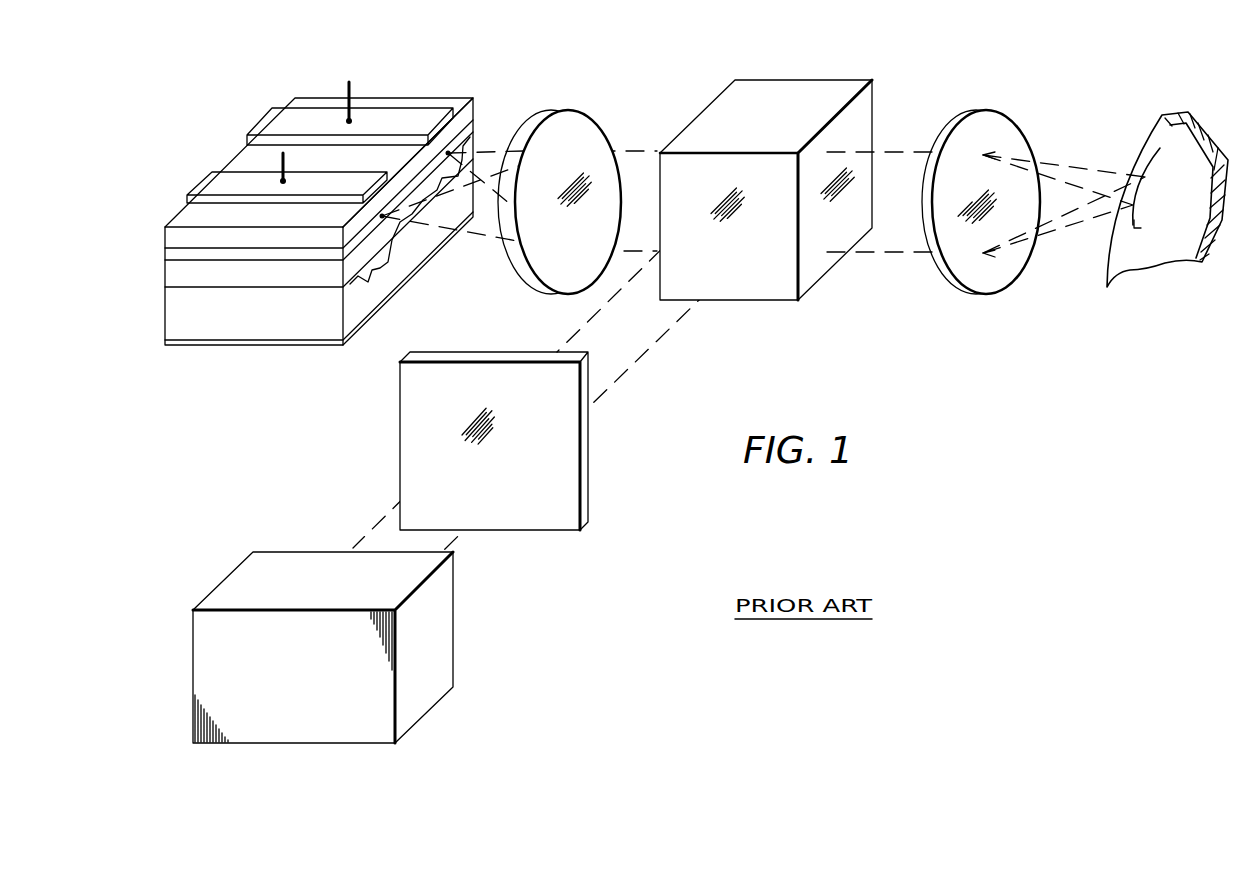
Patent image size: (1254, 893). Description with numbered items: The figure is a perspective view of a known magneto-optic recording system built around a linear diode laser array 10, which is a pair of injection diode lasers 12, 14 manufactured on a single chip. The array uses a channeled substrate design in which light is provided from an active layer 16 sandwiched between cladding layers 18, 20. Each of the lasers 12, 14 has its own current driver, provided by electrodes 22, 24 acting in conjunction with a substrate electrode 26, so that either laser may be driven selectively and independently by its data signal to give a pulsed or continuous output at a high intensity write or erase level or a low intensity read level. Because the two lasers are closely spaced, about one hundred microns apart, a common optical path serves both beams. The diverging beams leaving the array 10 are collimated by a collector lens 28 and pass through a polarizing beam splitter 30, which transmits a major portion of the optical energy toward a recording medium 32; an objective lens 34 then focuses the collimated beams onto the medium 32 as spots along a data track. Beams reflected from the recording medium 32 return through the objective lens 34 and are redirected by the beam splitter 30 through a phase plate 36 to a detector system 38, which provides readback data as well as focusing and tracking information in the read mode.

The linear diode laser array 10 is at (390, 78).
The injection diode laser 12 is at (382, 220).
The injection diode laser 14 is at (472, 142).
The active layer 16 is at (172, 250).
The cladding layer 18 is at (171, 233).
The cladding layer 20 is at (172, 306).
The electrode 22 is at (218, 182).
The electrode 24 is at (272, 124).
The substrate electrode 26 is at (172, 343).
The collector lens 28 is at (590, 130).
The polarizing beam splitter 30 is at (778, 92).
The recording medium 32 is at (1152, 138).
The objective lens 34 is at (998, 128).
The phase plate 36 is at (588, 460).
The detector system 38 is at (445, 617).